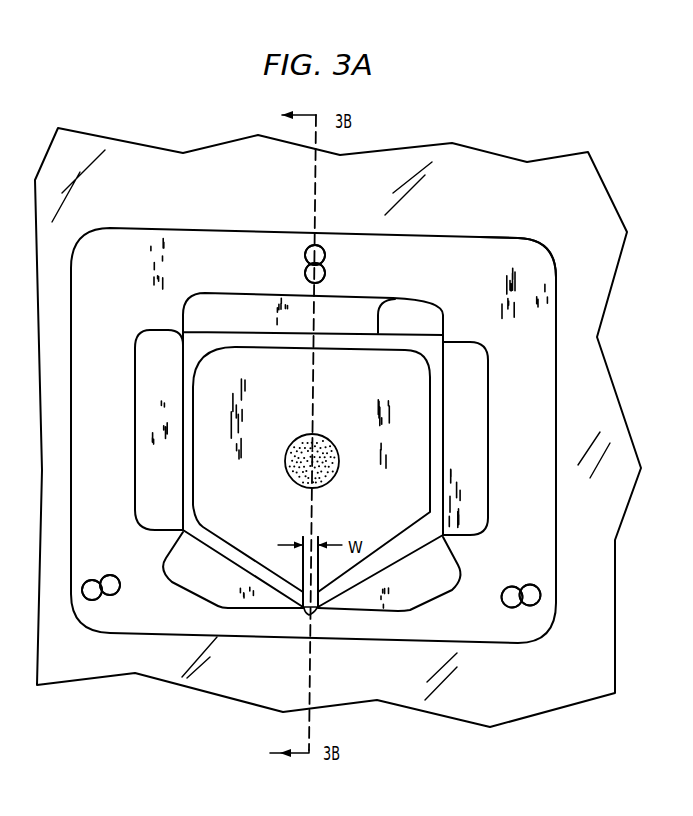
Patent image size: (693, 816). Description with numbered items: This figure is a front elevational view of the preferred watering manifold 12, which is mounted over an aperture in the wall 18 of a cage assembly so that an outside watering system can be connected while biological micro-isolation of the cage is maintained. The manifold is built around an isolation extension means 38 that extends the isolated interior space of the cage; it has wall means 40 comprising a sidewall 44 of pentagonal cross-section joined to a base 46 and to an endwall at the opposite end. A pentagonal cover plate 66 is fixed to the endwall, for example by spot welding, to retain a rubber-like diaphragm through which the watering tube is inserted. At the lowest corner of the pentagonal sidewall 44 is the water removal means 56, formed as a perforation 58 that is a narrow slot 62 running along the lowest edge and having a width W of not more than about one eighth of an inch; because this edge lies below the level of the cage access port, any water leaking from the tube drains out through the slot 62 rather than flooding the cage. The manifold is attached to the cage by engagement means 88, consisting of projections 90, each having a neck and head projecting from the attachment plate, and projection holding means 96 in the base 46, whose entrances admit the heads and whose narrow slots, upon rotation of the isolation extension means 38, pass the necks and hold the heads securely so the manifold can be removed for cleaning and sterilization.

The watering manifold 12 is at (575, 525).
The wall 18 is at (589, 190).
The isolation extension means 38 is at (150, 333).
The wall means 40 is at (430, 380).
The sidewall 44 is at (403, 300).
The base 46 is at (535, 284).
The water removal means 56 is at (303, 612).
The perforation 58 is at (296, 615).
The slot 62 is at (312, 612).
The cover plate 66 is at (205, 472).
The engagement means 88 is at (327, 245).
The projection 90 is at (305, 256).
The projection holding means 96 is at (326, 272).